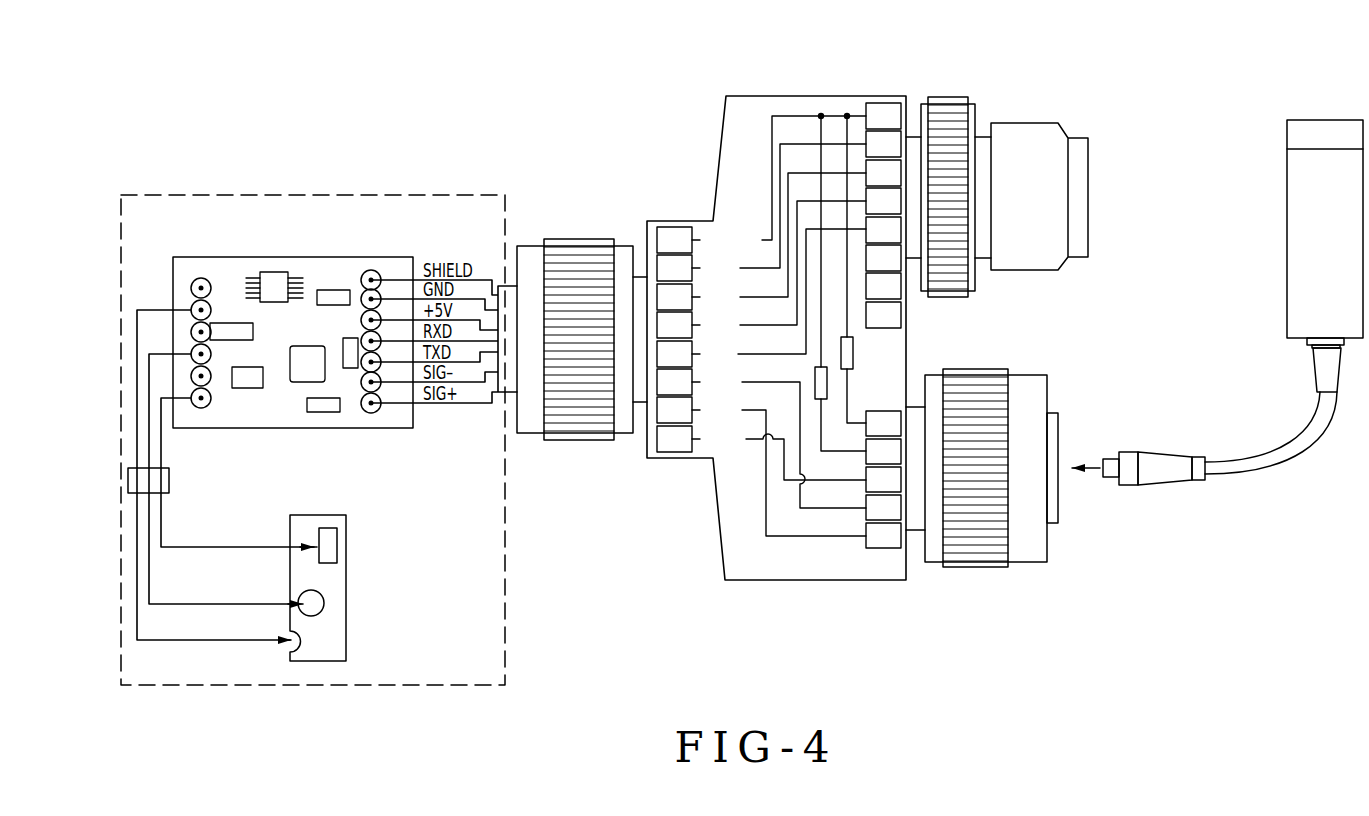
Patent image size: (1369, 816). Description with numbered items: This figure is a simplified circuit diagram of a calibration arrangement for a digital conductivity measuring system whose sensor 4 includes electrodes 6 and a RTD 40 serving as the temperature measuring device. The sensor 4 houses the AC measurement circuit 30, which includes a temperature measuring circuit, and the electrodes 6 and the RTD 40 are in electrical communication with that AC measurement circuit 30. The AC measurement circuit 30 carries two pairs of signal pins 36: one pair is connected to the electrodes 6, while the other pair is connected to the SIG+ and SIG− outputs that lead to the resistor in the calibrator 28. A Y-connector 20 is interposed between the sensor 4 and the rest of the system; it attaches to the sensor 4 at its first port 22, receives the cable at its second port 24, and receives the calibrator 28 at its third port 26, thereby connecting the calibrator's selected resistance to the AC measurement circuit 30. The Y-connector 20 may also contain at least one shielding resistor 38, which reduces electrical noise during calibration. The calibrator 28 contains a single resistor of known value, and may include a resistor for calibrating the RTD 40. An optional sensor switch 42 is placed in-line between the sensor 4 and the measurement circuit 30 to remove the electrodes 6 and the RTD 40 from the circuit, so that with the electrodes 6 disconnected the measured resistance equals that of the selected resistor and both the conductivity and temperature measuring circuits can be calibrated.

The sensor 4 is at (541, 600).
The electrodes 6 is at (322, 608).
The Y-connector 20 is at (688, 130).
The first port 22 is at (580, 280).
The second port 24 is at (1036, 187).
The third port 26 is at (973, 515).
The calibrator 28 is at (1258, 283).
The AC measurement circuit 30 is at (282, 248).
The signal pins 36 is at (207, 283).
The shielding resistor 38 is at (853, 350).
The RTD 40 is at (337, 538).
The sensor switch 42 is at (169, 481).